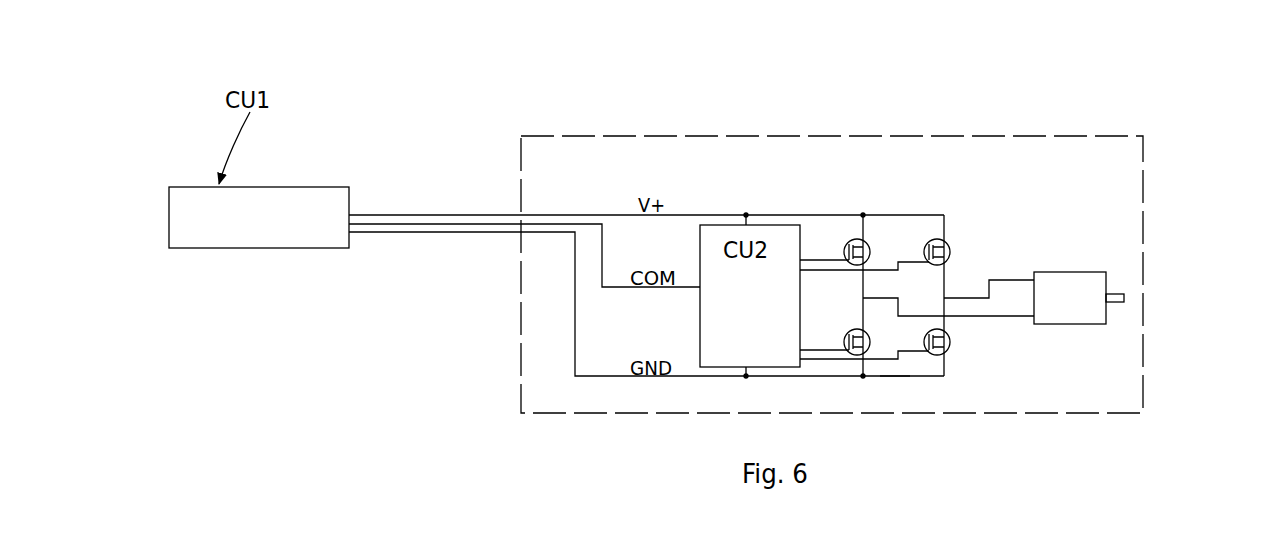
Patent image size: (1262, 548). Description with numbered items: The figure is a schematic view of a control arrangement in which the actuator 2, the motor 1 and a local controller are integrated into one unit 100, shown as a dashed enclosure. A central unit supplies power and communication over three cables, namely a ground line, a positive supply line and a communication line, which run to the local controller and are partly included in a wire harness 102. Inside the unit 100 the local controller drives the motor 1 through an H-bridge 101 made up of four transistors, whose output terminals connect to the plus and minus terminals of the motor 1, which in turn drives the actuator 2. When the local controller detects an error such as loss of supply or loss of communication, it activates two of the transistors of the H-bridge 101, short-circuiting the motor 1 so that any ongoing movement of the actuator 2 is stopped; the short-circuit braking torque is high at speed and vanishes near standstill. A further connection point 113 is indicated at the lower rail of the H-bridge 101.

The motor 1 is at (1077, 271).
The actuator 2 is at (1119, 291).
The unit 100 is at (805, 135).
The H-bridge 101 is at (887, 214).
The wire harness 102 is at (429, 213).
The ground connection point 113 is at (895, 379).